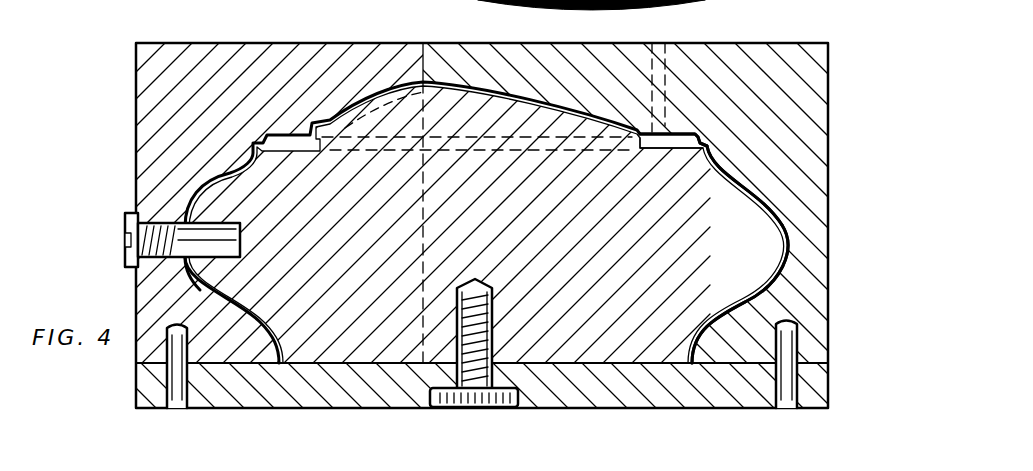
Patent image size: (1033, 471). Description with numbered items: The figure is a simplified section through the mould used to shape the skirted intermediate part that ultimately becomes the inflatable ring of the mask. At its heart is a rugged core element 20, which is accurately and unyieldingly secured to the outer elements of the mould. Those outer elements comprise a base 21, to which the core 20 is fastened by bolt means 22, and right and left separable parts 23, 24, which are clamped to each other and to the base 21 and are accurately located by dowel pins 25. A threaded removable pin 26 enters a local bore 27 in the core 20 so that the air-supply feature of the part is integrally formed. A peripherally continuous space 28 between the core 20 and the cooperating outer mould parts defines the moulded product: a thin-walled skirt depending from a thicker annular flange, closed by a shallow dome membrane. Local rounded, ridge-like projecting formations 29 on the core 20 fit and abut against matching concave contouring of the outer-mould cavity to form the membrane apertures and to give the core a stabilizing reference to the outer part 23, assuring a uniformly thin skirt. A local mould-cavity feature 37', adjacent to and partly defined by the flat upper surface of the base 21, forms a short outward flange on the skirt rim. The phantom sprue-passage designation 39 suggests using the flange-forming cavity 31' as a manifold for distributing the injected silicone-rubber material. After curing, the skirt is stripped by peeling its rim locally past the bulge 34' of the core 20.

The core element 20 is at (506, 221).
The base 21 is at (580, 400).
The bolt means 22 is at (493, 318).
The left separable part 23 is at (257, 89).
The right separable part 24 is at (720, 103).
The dowel pins 25 is at (790, 343).
The threaded removable pin 26 is at (175, 218).
The local bore 27 is at (190, 268).
The peripherally continuous space 28 is at (752, 186).
The projecting formations 29 is at (363, 88).
The flange-forming cavity 31' is at (663, 178).
The bulge 34' is at (817, 260).
The local mould-cavity feature 37' is at (716, 366).
The phantom sprue-passage designation 39 is at (672, 65).